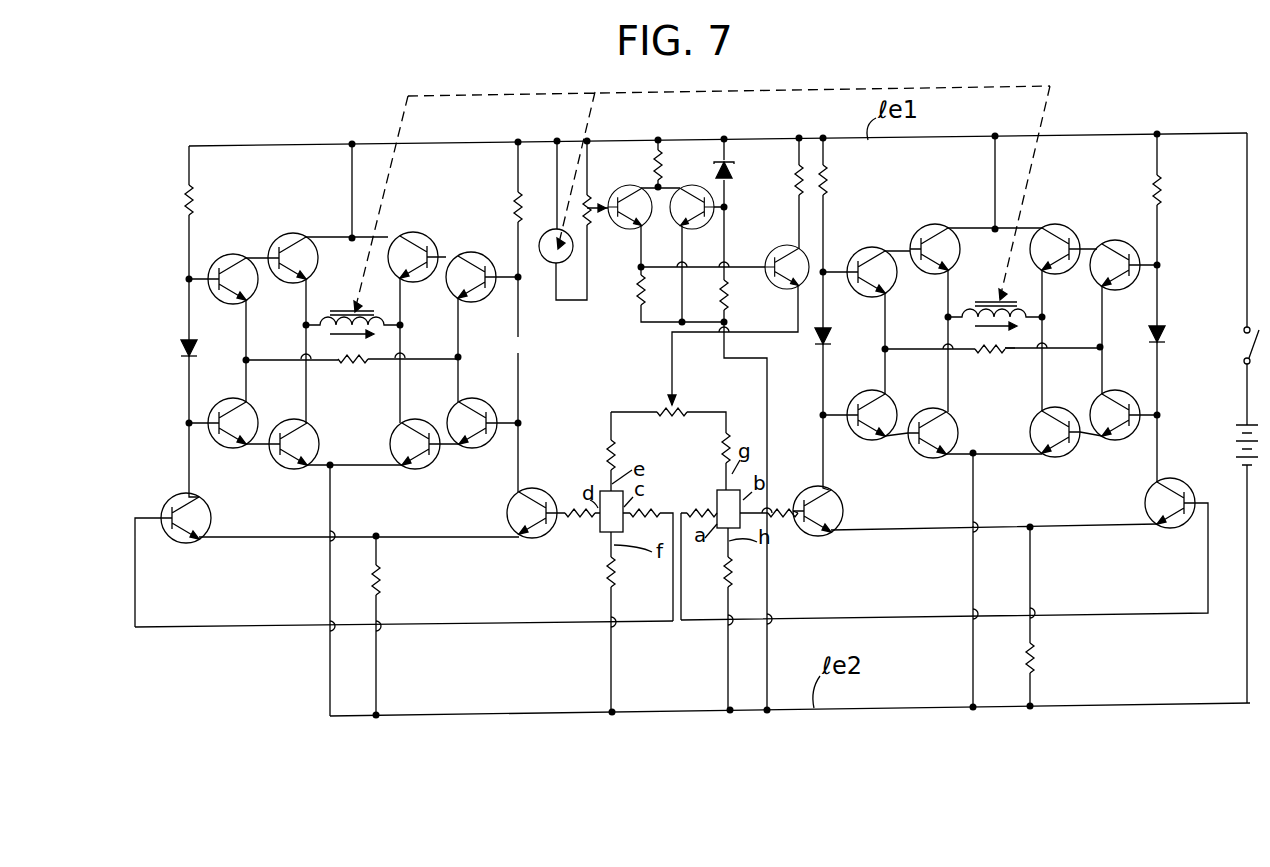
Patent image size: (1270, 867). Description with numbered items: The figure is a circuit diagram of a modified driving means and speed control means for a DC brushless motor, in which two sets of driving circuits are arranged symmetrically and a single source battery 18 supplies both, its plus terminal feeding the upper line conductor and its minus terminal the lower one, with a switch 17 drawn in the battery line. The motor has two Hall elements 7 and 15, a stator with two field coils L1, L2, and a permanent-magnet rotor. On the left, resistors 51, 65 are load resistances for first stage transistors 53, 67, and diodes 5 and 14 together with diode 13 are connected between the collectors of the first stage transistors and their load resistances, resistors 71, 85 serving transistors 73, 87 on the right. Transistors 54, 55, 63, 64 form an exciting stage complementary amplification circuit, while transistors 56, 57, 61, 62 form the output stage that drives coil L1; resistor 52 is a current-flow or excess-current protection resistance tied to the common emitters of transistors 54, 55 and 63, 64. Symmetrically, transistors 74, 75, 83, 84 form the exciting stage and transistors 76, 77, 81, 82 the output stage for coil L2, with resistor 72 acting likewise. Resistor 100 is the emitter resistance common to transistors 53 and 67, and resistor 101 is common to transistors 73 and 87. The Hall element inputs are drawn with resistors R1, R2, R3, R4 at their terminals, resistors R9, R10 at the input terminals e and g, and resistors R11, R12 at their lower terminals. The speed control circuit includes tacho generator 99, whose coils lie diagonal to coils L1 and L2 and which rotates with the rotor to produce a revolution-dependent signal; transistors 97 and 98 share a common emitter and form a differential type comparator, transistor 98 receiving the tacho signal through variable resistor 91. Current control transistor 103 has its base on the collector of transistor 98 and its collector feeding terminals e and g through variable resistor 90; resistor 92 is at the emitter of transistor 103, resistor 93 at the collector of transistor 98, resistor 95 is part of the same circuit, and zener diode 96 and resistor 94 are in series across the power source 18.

The diode 5 is at (180, 349).
The Hall element 7 is at (607, 532).
The diode 13 is at (831, 336).
The diode 14 is at (1164, 334).
The Hall element 15 is at (712, 542).
The switch 17 is at (1244, 360).
The power source 18 is at (1238, 440).
The resistor 51 is at (194, 202).
The resistor 52 is at (352, 362).
The first stage transistor 53 is at (180, 496).
The exciting stage transistor 54 is at (232, 256).
The exciting stage transistor 55 is at (231, 399).
The output stage transistor 56 is at (290, 234).
The output stage transistor 57 is at (292, 420).
The output stage transistor 61 is at (410, 232).
The output stage transistor 62 is at (422, 419).
The exciting stage transistor 63 is at (466, 252).
The exciting stage transistor 64 is at (483, 398).
The resistor 65 is at (514, 206).
The first stage transistor 67 is at (536, 488).
The resistor 71 is at (826, 180).
The resistor 72 is at (995, 352).
The first stage transistor 73 is at (842, 496).
The exciting stage transistor 74 is at (872, 246).
The exciting stage transistor 75 is at (870, 390).
The output stage transistor 76 is at (934, 224).
The output stage transistor 77 is at (930, 408).
The output stage transistor 81 is at (1052, 224).
The output stage transistor 82 is at (1060, 407).
The exciting stage transistor 83 is at (1114, 240).
The exciting stage transistor 84 is at (1114, 390).
The resistor 85 is at (1160, 185).
The first stage transistor 87 is at (1154, 492).
The variable resistor 90 is at (670, 398).
The variable resistor 91 is at (590, 218).
The resistor 92 is at (797, 186).
The resistor 93 is at (638, 296).
The resistor 94 is at (728, 294).
The resistor 95 is at (659, 161).
The zener diode 96 is at (728, 172).
The transistor 97 is at (703, 228).
The transistor 98 is at (626, 186).
The tacho generator 99 is at (550, 264).
The resistor 100 is at (380, 578).
The resistor 101 is at (1034, 656).
The current control transistor 103 is at (778, 246).
The field coil L1 is at (346, 308).
The field coil L2 is at (990, 298).
The resistor R1 is at (576, 506).
The resistor R2 is at (647, 506).
The resistor R3 is at (700, 506).
The resistor R4 is at (782, 506).
The resistor R9 is at (608, 452).
The resistor R10 is at (722, 448).
The resistor R11 is at (616, 572).
The resistor R12 is at (732, 576).